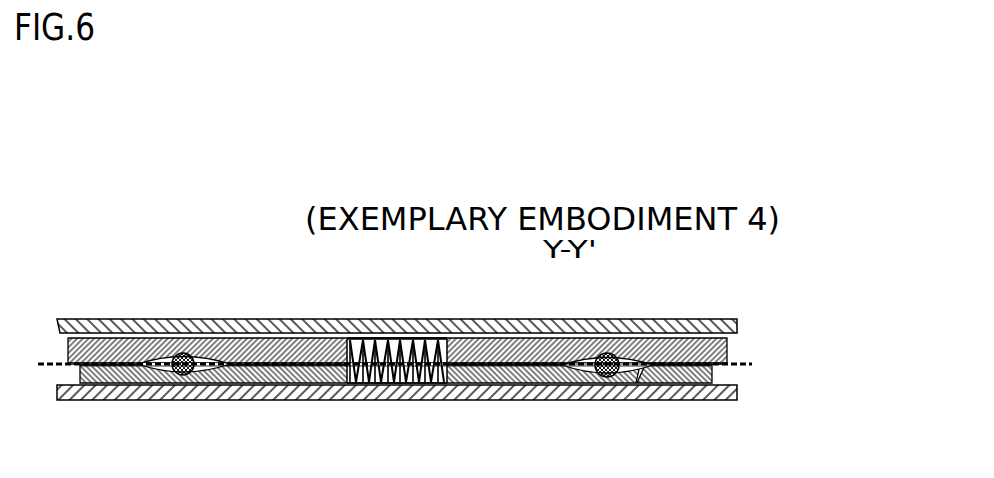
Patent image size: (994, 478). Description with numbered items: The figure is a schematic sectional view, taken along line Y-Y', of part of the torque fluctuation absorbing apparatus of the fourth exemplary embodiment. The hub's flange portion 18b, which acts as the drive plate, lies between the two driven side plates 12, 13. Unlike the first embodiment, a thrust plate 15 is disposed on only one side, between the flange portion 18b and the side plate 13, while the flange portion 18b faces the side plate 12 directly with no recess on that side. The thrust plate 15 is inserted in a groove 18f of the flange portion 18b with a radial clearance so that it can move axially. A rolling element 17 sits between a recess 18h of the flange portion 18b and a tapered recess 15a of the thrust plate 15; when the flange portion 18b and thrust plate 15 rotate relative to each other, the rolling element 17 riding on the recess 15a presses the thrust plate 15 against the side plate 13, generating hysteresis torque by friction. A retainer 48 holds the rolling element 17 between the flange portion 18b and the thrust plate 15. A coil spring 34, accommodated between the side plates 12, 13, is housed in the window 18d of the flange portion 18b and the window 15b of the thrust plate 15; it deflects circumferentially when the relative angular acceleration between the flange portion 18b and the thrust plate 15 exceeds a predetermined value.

The side plate 12 is at (254, 321).
The side plate 13 is at (247, 399).
The thrust plate 15 is at (325, 375).
The recess 15a is at (637, 373).
The window 15b is at (375, 386).
The rolling element 17 is at (607, 380).
The flange portion 18b is at (478, 348).
The window 18d is at (386, 331).
The groove 18f is at (517, 367).
The recess 18h is at (573, 373).
The coil spring 34 is at (413, 384).
The retainer 48 is at (749, 362).